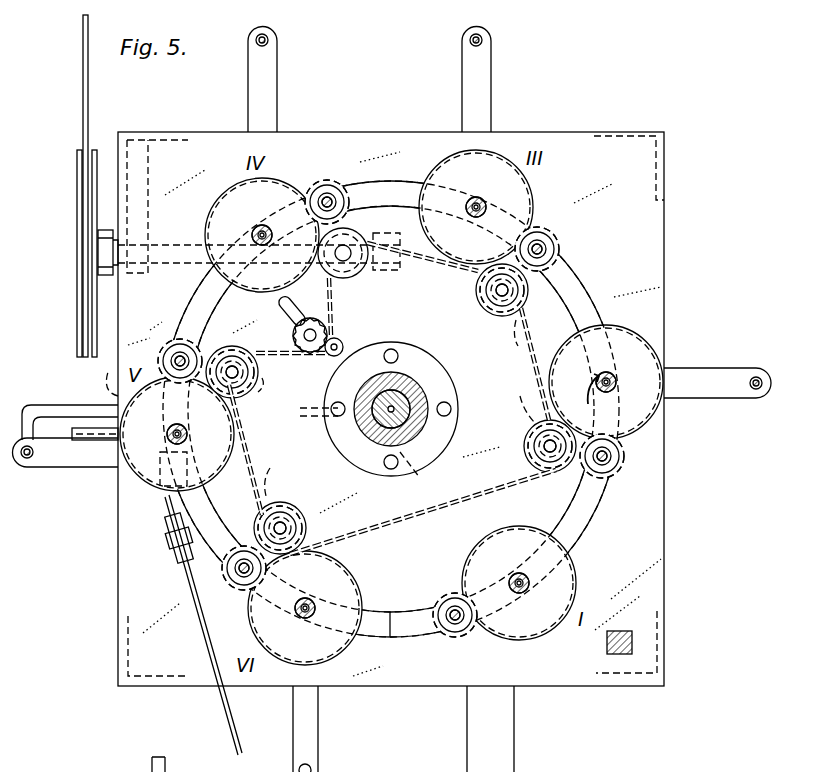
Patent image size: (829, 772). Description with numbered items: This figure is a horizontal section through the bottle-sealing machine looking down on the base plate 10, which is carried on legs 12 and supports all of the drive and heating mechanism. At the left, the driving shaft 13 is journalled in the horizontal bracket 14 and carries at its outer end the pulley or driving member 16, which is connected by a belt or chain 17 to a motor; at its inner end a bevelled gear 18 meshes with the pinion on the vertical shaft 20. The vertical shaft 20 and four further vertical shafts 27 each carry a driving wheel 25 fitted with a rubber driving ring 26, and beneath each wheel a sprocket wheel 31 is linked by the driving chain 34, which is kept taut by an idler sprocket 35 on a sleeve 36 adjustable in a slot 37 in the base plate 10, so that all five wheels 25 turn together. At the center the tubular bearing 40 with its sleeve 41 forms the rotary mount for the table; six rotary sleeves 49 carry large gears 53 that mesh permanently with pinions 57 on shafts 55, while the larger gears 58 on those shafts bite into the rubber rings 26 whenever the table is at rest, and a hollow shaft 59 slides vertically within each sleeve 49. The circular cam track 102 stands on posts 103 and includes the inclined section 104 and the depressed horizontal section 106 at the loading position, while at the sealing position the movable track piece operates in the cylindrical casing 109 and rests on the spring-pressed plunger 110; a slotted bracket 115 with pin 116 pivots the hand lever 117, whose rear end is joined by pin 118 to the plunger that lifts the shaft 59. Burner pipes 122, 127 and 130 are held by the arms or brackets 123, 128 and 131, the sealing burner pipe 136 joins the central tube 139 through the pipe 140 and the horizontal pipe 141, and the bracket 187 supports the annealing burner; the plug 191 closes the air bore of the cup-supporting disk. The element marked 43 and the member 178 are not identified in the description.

The base plate 10 is at (396, 687).
The legs 12 is at (170, 137).
The driving shaft 13 is at (178, 228).
The horizontal bracket 14 is at (149, 213).
The pulley or driving member 16 is at (77, 234).
The belt or chain 17 is at (83, 65).
The bevelled gear 18 is at (372, 237).
The vertical shaft 20 is at (354, 248).
The driving wheel 25 is at (350, 282).
The rubber driving ring 26 is at (362, 270).
The vertical shaft 27 is at (500, 304).
The sprocket wheel 31 is at (397, 408).
The driving chain 34 is at (536, 318).
The idler sprocket 35 is at (342, 338).
The sleeve 36 is at (292, 336).
The slot 37 is at (282, 303).
The tubular bearing 40 is at (372, 442).
The sleeve 41 is at (400, 382).
The block 43 is at (620, 632).
The rotary sleeve 49 is at (264, 226).
The large gear 53 is at (236, 192).
The rotary shaft 55 is at (324, 200).
The small gear or pinion 57 is at (333, 206).
The larger gear 58 is at (325, 190).
The hollow shaft 59 is at (265, 248).
The cam track 102 is at (592, 306).
The posts 103 is at (398, 188).
The inclined section 104 is at (372, 614).
The horizontal section 106 is at (410, 616).
The cylindrical casing 109 is at (205, 480).
The plunger 110 is at (108, 390).
The slotted bracket 115 is at (168, 560).
The pin 116 is at (164, 540).
The lever 117 is at (224, 718).
The pin 118 is at (156, 500).
The pipe 122 is at (755, 391).
The arm or bracket 123 is at (728, 360).
The pipe 127 is at (490, 39).
The arm or bracket 128 is at (481, 78).
The pipe 130 is at (275, 36).
The arm or bracket 131 is at (268, 63).
The pipe 136 is at (26, 460).
The tube 139 is at (418, 378).
The pipe 140 is at (424, 472).
The horizontal pipe 141 is at (302, 402).
The arm 178 is at (514, 728).
The bracket 187 is at (318, 745).
The screw-threaded plug 191 is at (82, 428).